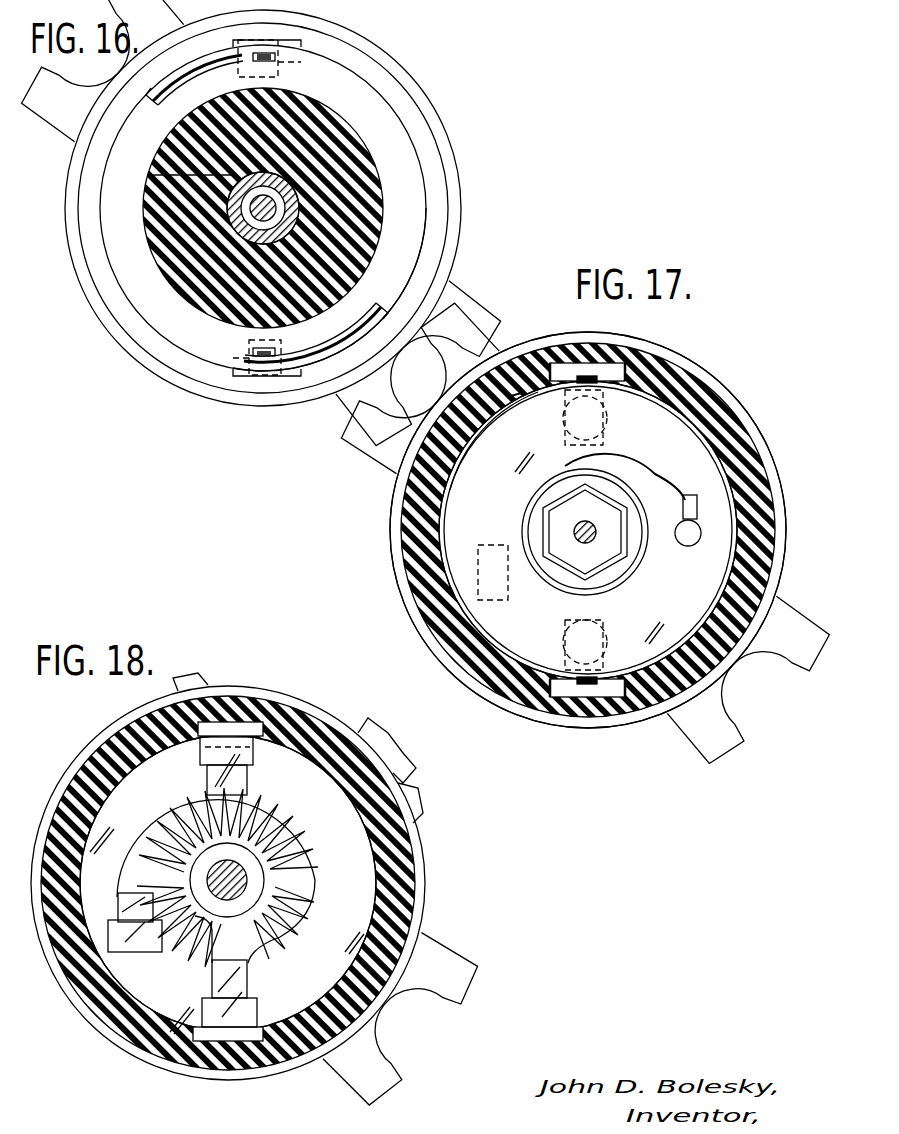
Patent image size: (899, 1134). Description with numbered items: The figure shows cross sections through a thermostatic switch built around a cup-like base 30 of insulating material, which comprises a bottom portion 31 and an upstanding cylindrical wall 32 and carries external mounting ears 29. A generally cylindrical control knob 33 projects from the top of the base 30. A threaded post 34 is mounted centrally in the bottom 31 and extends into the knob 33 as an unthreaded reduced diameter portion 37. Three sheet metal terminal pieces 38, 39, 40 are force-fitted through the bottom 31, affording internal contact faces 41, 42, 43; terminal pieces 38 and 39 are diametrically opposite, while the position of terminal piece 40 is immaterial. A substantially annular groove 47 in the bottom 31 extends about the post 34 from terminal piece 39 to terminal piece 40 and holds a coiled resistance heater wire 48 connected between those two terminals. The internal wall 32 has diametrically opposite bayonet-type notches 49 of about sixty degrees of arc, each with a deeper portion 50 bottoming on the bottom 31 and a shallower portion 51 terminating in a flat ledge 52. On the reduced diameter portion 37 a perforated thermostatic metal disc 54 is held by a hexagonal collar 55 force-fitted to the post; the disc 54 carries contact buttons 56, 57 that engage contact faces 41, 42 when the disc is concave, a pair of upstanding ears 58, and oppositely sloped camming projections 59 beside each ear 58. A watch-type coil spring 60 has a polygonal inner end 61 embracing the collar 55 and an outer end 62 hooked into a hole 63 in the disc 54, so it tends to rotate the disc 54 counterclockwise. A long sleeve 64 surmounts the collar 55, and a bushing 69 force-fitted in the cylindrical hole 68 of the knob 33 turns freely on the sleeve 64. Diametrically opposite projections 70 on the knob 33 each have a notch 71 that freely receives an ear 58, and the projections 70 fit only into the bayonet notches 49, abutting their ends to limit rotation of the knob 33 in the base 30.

In FIG. 16, the mounting ears 29 is at (274, 226).
In FIG. 17, the mounting ears 29 is at (585, 534).
In FIG. 18, the mounting ears 29 is at (272, 892).
In FIG. 16, the base 30 is at (305, 208).
In FIG. 17, the base 30 is at (565, 530).
In FIG. 18, the base 30 is at (258, 883).
In FIG. 16, the bottom portion 31 is at (243, 208).
In FIG. 17, the bottom portion 31 is at (591, 530).
In FIG. 18, the bottom portion 31 is at (249, 883).
In FIG. 16, the cylindrical wall 32 is at (329, 338).
In FIG. 17, the cylindrical wall 32 is at (588, 571).
In FIG. 18, the cylindrical wall 32 is at (270, 883).
In FIG. 16, the control knob 33 is at (302, 208).
In FIG. 18, the threaded post 34 is at (224, 881).
In FIG. 16, the reduced diameter portion 37 is at (293, 208).
In FIG. 17, the reduced diameter portion 37 is at (540, 519).
In FIG. 18, the terminal piece 38 is at (248, 758).
In FIG. 18, the terminal piece 39 is at (249, 1012).
In FIG. 18, the terminal piece 40 is at (155, 936).
In FIG. 17, the internal contact face 41 is at (609, 417).
In FIG. 18, the internal contact face 41 is at (251, 777).
In FIG. 17, the internal contact face 42 is at (610, 632).
In FIG. 18, the internal contact face 42 is at (254, 988).
In FIG. 17, the internal contact face 43 is at (482, 559).
In FIG. 18, the internal contact face 43 is at (160, 917).
In FIG. 18, the annular groove 47 is at (241, 877).
In FIG. 18, the heater wire 48 is at (280, 880).
In FIG. 16, the bayonet-type notches 49 is at (237, 248).
In FIG. 17, the bayonet-type notches 49 is at (559, 582).
In FIG. 16, the deeper portions 50 is at (295, 226).
In FIG. 17, the deeper portions 50 is at (587, 530).
In FIG. 18, the deeper portions 50 is at (235, 882).
In FIG. 16, the shallower portions 51 is at (286, 192).
In FIG. 17, the shallower portions 51 is at (577, 521).
In FIG. 16, the ledges 52 is at (230, 231).
In FIG. 17, the ledges 52 is at (574, 542).
In FIG. 17, the thermostatic metal disc 54 is at (576, 530).
In FIG. 17, the polygonal collar 55 is at (578, 545).
In FIG. 17, the contact button 56 is at (605, 418).
In FIG. 17, the contact button 57 is at (613, 641).
In FIG. 16, the upstanding ears 58 is at (290, 250).
In FIG. 17, the upstanding ears 58 is at (586, 530).
In FIG. 17, the projections 59 is at (595, 531).
In FIG. 17, the coil spring 60 is at (597, 532).
In FIG. 17, the inner end 61 is at (625, 477).
In FIG. 17, the outer end 62 is at (697, 491).
In FIG. 17, the hole 63 is at (695, 542).
In FIG. 16, the sleeve 64 is at (191, 208).
In FIG. 16, the cylindrical hole 68 is at (180, 214).
In FIG. 16, the bushing 69 is at (158, 173).
In FIG. 16, the projections 70 is at (256, 247).
In FIG. 16, the notch 71 is at (266, 258).